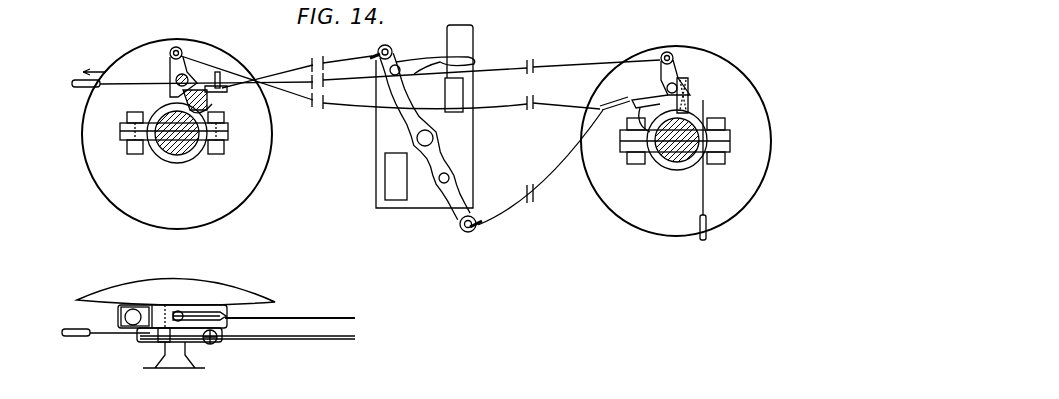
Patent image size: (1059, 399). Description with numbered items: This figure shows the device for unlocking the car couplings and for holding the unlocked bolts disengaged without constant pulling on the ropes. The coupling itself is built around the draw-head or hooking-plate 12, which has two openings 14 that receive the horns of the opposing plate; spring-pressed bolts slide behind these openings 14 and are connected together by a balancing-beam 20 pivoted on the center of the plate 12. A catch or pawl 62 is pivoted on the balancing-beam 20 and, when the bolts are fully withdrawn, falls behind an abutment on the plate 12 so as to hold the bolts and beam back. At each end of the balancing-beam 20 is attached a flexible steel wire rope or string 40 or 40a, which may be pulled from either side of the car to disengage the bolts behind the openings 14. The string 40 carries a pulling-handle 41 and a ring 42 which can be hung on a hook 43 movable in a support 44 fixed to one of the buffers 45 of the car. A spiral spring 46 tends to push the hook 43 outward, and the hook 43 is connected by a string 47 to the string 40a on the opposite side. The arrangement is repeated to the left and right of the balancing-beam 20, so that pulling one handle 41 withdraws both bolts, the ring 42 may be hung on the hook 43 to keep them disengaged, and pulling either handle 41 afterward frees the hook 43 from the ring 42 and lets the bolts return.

The draw-head or hooking-plate 12 is at (424, 116).
The openings 14 is at (424, 139).
The balancing-beam 20 is at (410, 127).
The flexible steel wire rope or string 40 is at (352, 58).
The flexible steel wire rope or string 40a is at (502, 208).
The pulling-handle 41 is at (78, 88).
The ring 42 is at (258, 98).
The hook 43 is at (222, 78).
The support 44 is at (222, 97).
The buffer 45 is at (185, 275).
The spiral spring 46 is at (228, 112).
The string 47 is at (344, 106).
The catch or pawl 62 is at (430, 58).